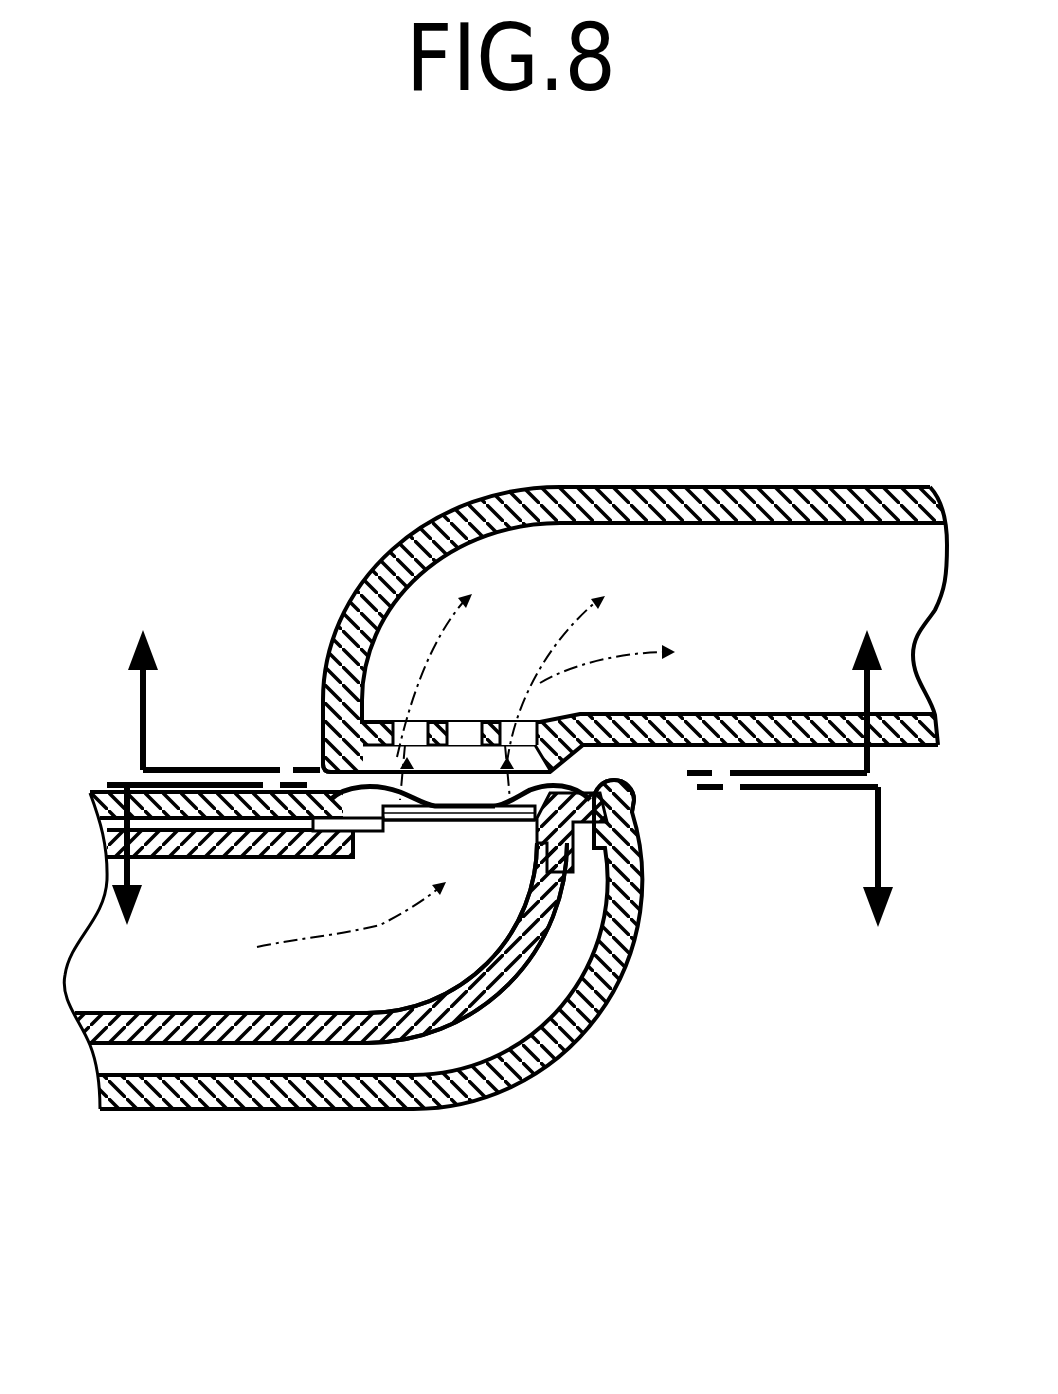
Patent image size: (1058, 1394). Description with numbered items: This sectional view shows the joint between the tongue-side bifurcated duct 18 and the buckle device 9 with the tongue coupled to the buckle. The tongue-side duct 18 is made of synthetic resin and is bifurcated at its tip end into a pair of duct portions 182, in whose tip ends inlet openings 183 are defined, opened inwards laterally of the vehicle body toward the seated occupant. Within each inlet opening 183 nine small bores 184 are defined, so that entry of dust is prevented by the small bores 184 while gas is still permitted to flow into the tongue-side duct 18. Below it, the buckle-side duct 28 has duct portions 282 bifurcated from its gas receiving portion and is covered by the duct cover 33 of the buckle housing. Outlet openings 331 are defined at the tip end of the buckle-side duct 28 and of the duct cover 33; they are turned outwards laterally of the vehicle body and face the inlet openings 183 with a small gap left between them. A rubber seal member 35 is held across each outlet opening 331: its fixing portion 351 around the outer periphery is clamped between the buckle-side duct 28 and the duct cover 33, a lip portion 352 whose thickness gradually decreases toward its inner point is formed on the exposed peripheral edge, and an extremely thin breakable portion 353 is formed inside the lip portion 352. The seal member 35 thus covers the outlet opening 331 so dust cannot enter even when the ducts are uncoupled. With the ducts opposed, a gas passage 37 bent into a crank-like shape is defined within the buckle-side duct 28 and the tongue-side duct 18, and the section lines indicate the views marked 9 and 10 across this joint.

The tongue-side bifurcated duct 18 is at (758, 472).
The duct portions 182 is at (627, 487).
The inlet openings 183 is at (333, 767).
The small bores 184 is at (540, 713).
The gas passage 37 is at (762, 658).
The duct cover 33 is at (610, 1003).
The outlet openings 331 is at (640, 790).
The buckle-side duct 28 is at (310, 1052).
The duct portions 282 is at (503, 1000).
The seal member 35 is at (410, 830).
The fixing portion 351 is at (330, 850).
The lip portion 352 is at (575, 882).
The breakable portion 353 is at (460, 822).
The section line 10- 10 is at (501, 655).
The buckle device 9 is at (503, 907).